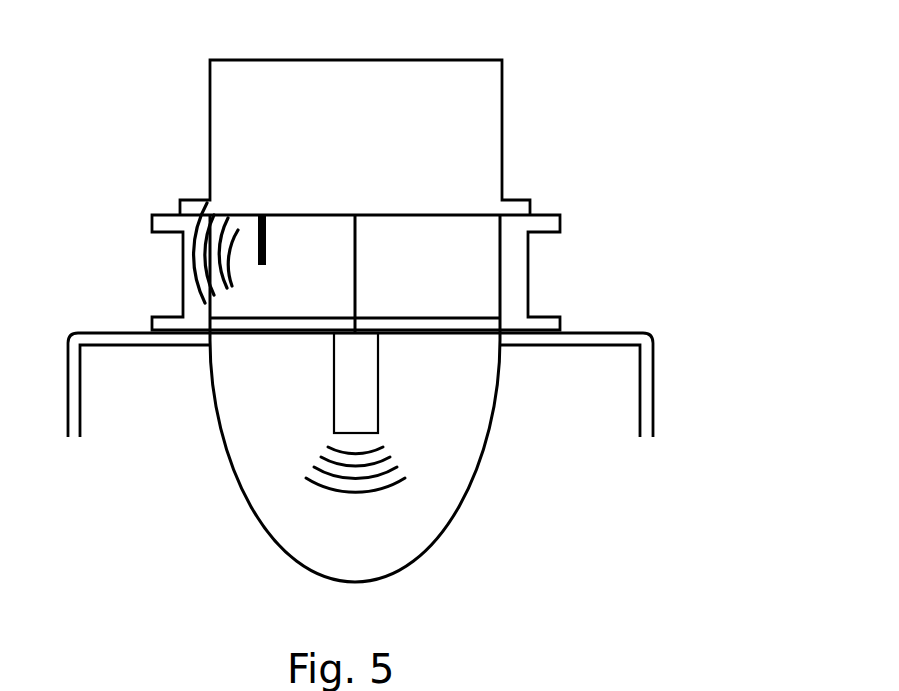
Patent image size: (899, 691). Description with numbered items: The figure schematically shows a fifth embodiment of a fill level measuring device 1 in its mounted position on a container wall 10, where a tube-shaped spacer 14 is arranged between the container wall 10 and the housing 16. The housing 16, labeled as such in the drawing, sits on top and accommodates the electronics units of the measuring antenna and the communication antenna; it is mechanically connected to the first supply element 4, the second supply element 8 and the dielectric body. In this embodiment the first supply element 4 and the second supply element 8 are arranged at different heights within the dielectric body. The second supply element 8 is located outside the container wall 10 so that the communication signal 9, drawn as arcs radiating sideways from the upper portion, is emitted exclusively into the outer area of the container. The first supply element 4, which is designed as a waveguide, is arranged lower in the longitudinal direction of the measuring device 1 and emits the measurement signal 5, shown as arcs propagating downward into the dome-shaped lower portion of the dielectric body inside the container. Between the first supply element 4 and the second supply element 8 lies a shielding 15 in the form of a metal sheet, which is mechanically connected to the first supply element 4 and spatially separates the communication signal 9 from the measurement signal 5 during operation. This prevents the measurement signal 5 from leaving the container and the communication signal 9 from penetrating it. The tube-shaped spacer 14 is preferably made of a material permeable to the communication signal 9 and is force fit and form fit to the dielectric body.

The fill level measuring device 1 is at (55, 90).
The first supply element 4 is at (333, 398).
The electromagnetic measurement signal 5 is at (417, 500).
The second supply element 8 is at (261, 265).
The electromagnetic communication signal 9 is at (160, 245).
The container wall 10 is at (650, 348).
The tube-shaped spacer 14 is at (528, 282).
The shielding 15 is at (455, 328).
The housing 16 is at (502, 137).